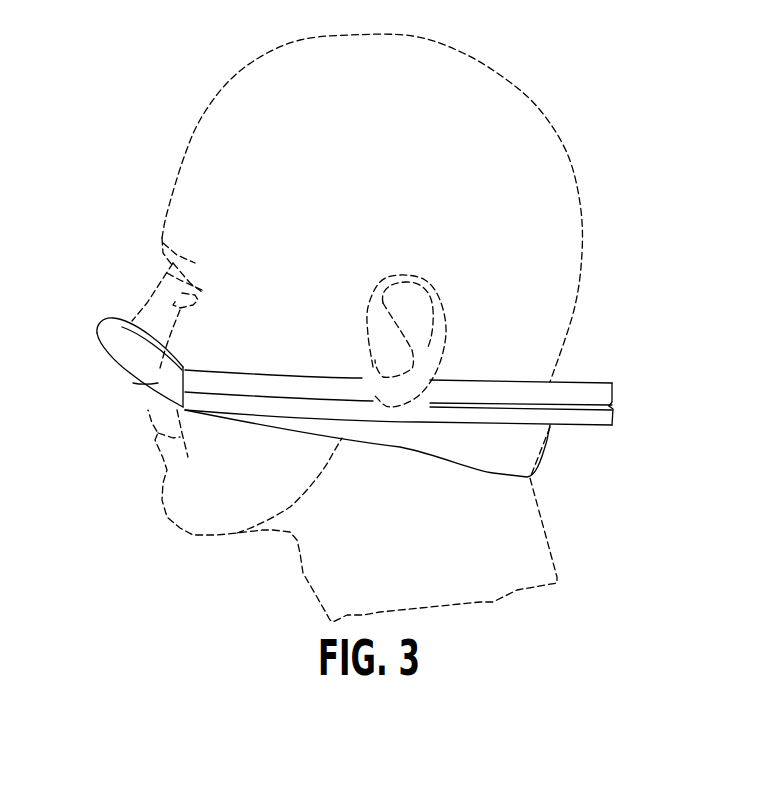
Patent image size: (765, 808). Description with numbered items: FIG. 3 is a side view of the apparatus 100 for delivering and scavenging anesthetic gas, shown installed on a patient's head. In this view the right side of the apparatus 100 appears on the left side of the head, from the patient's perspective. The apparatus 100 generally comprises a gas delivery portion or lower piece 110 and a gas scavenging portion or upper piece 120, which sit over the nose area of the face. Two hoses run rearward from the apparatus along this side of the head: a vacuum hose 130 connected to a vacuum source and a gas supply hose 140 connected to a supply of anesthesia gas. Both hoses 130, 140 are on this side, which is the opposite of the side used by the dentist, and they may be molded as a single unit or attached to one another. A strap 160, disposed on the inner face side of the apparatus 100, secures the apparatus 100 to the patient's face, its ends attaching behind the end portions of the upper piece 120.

The apparatus 100 is at (339, 412).
The gas delivery portion 110 is at (132, 384).
The gas scavenging portion 120 is at (97, 333).
The vacuum hose 130 is at (592, 382).
The gas supply hose 140 is at (583, 427).
The strap 160 is at (571, 480).